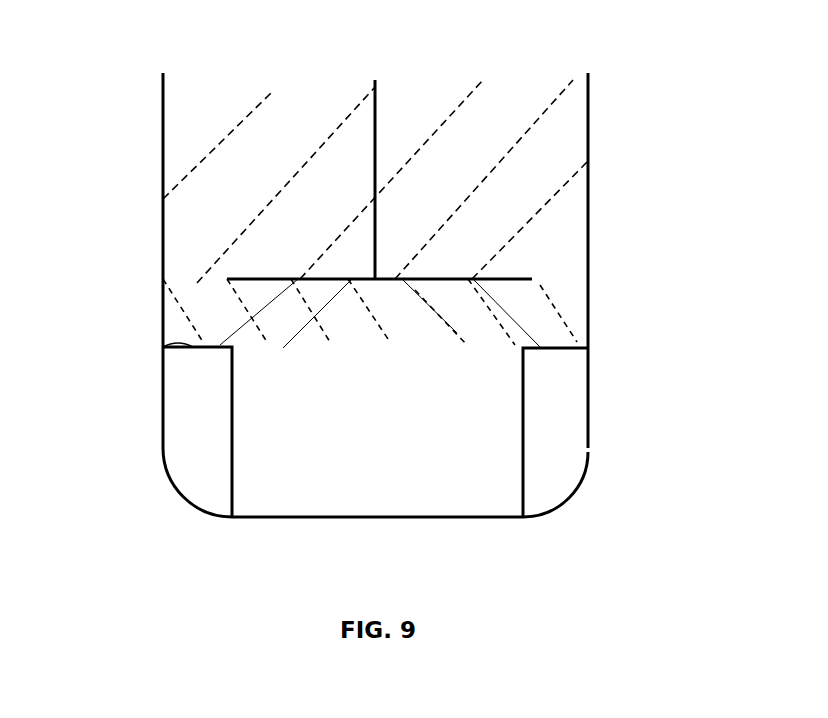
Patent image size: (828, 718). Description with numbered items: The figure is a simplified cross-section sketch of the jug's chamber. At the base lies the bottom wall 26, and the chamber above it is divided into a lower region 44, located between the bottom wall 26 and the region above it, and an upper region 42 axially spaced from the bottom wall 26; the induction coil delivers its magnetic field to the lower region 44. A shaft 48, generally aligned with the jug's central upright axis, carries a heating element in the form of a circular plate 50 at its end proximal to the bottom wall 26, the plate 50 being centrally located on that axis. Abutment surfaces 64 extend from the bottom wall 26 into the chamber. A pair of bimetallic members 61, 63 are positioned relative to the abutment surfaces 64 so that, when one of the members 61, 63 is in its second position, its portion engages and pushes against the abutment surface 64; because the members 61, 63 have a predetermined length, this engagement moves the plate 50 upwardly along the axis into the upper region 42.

The bottom wall 26 is at (448, 517).
The upper region 42 is at (589, 165).
The lower region 44 is at (166, 297).
The shaft 48 is at (375, 131).
The circular plate 50 is at (532, 279).
The bimetallic member 61 is at (460, 334).
The bimetallic member 63 is at (262, 303).
The abutment surface 64 is at (163, 347).